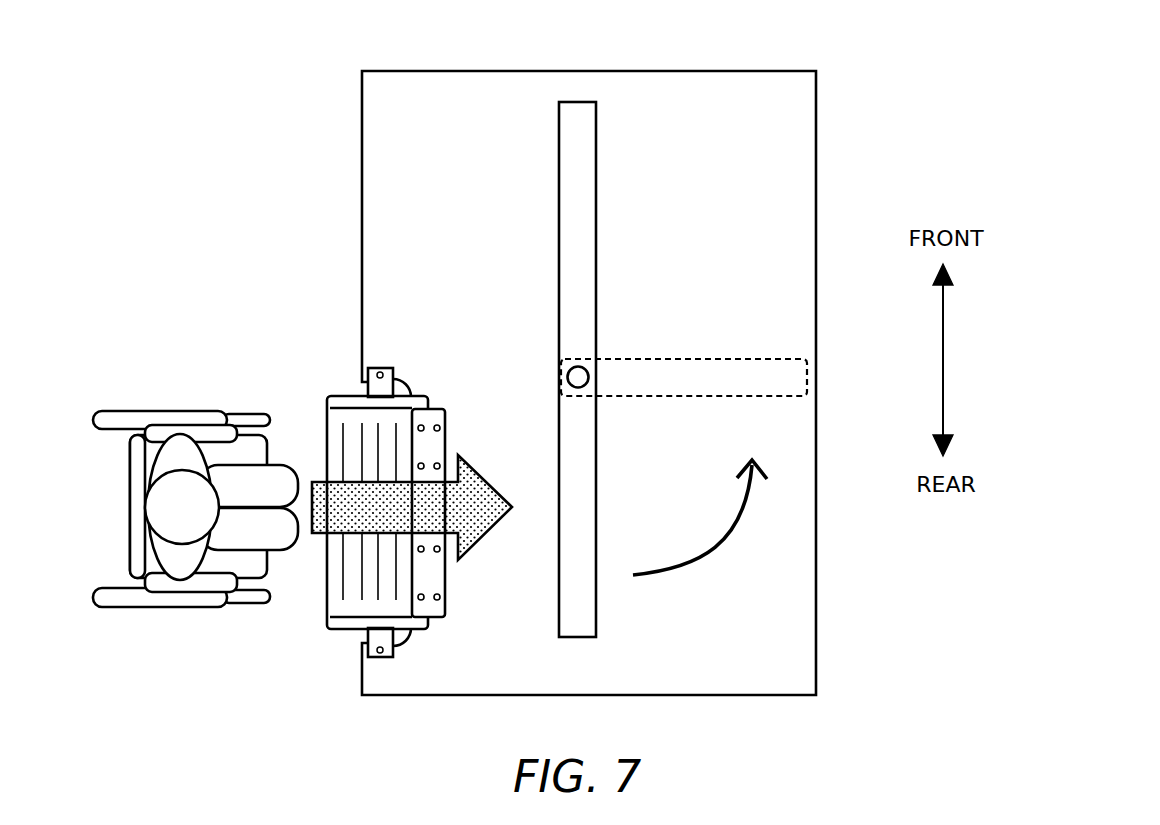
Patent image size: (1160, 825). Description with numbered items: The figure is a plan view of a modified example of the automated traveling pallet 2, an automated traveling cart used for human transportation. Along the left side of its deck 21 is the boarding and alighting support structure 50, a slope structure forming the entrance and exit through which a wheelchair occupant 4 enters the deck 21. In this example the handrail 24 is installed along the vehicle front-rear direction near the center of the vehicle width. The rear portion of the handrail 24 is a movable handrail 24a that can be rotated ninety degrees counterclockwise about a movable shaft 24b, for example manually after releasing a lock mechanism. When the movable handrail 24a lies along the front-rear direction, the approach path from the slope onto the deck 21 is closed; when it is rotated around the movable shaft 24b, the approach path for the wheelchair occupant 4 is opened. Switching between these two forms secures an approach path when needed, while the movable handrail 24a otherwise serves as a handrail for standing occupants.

The automated traveling pallet 2 is at (768, 46).
The occupant 4 is at (131, 411).
The deck 21 is at (762, 293).
The handrail 24 is at (582, 189).
The movable handrail 24a is at (793, 377).
The movable shaft 24b is at (578, 372).
The boarding and alighting support structure 50 is at (308, 657).